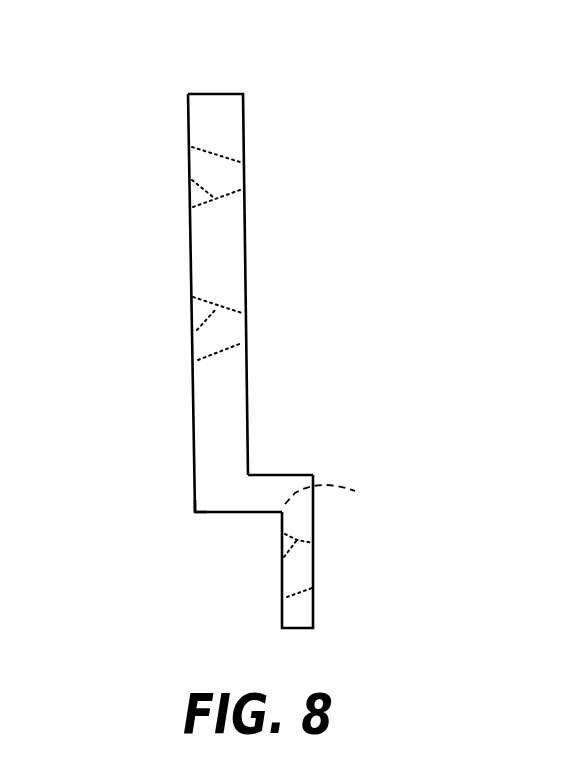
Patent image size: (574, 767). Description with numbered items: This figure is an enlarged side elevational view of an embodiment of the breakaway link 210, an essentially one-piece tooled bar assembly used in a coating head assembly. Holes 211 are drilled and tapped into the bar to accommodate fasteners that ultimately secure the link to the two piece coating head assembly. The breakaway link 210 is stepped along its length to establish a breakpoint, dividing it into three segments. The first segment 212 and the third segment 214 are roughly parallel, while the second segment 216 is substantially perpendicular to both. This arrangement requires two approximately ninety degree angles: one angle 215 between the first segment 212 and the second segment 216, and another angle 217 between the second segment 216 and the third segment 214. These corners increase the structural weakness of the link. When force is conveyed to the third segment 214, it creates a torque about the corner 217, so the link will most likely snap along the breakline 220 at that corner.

The breakaway link 210 is at (251, 349).
The holes 211 is at (190, 179).
The first segment 212 is at (249, 385).
The third segment 214 is at (315, 528).
The angle 215 is at (194, 512).
The second segment 216 is at (260, 499).
The angle 217 is at (313, 475).
The breakline 220 is at (346, 502).